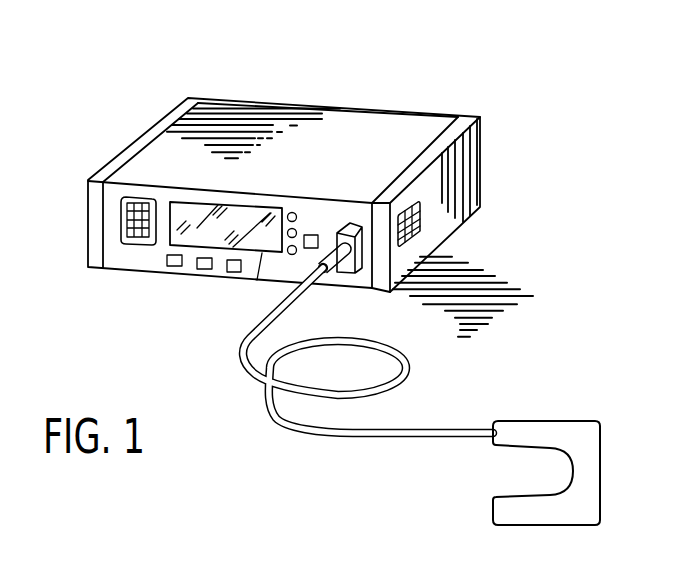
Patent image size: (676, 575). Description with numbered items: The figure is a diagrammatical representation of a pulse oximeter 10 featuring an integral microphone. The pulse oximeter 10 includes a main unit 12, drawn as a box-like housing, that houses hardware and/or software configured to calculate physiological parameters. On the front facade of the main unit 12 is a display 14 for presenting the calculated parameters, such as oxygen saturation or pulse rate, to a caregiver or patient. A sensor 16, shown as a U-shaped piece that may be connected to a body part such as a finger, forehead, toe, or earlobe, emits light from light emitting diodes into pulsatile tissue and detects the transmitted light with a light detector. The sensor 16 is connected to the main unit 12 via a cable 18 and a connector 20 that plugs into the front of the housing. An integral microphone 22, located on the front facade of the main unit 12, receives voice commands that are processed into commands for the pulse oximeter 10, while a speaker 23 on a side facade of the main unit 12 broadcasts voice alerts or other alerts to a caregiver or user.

The pulse oximeter 10 is at (152, 73).
The main unit 12 is at (365, 110).
The display 14 is at (260, 268).
The sensor 16 is at (588, 427).
The cable 18 is at (278, 417).
The connector 20 is at (359, 245).
The integral microphone 22 is at (124, 228).
The speaker 23 is at (420, 228).